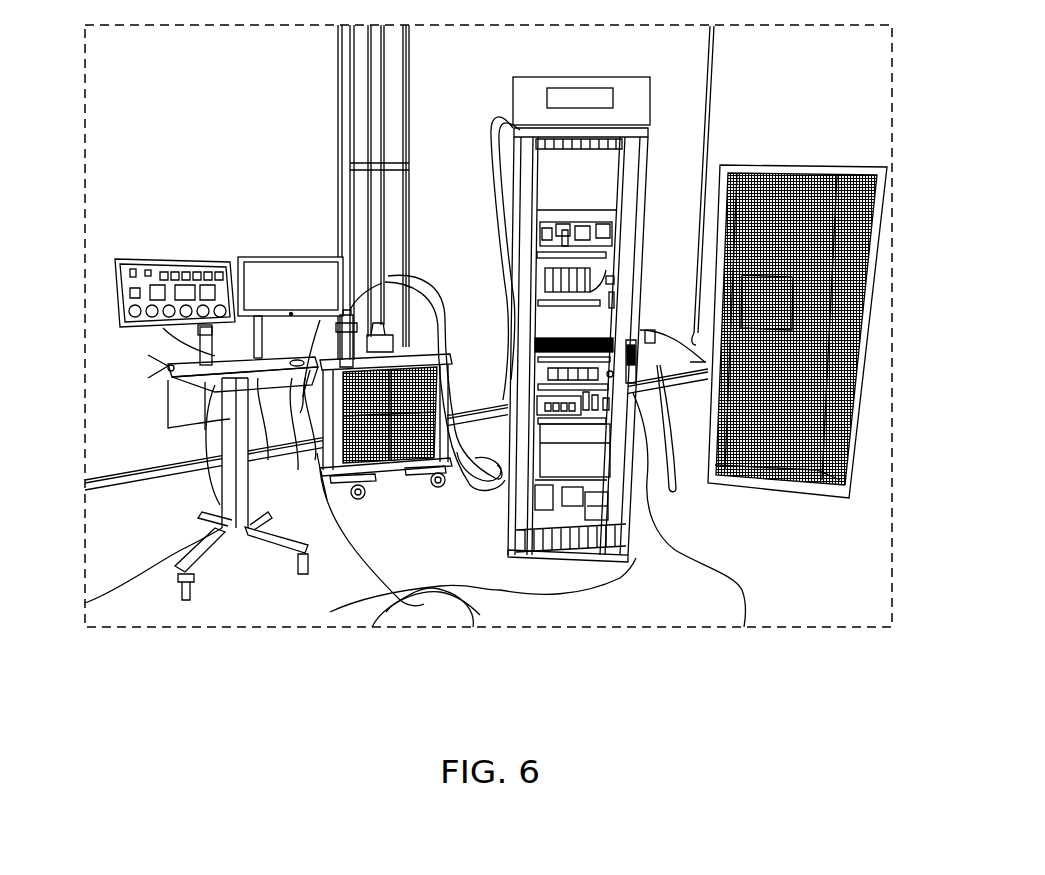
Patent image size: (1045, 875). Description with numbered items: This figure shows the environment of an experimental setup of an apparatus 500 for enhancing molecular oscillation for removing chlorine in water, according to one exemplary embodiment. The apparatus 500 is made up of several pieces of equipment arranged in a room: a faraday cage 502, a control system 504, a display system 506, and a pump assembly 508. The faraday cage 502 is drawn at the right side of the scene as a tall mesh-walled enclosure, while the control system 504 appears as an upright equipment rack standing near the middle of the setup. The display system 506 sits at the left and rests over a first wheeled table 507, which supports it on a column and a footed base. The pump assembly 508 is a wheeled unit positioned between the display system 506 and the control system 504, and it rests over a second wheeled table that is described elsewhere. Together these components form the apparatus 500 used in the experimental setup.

The apparatus 500 is at (156, 209).
The faraday cage 502 is at (813, 342).
The control system 504 is at (571, 462).
The display system 506 is at (121, 299).
The first wheeled table 507 is at (228, 420).
The pump assembly 508 is at (385, 458).